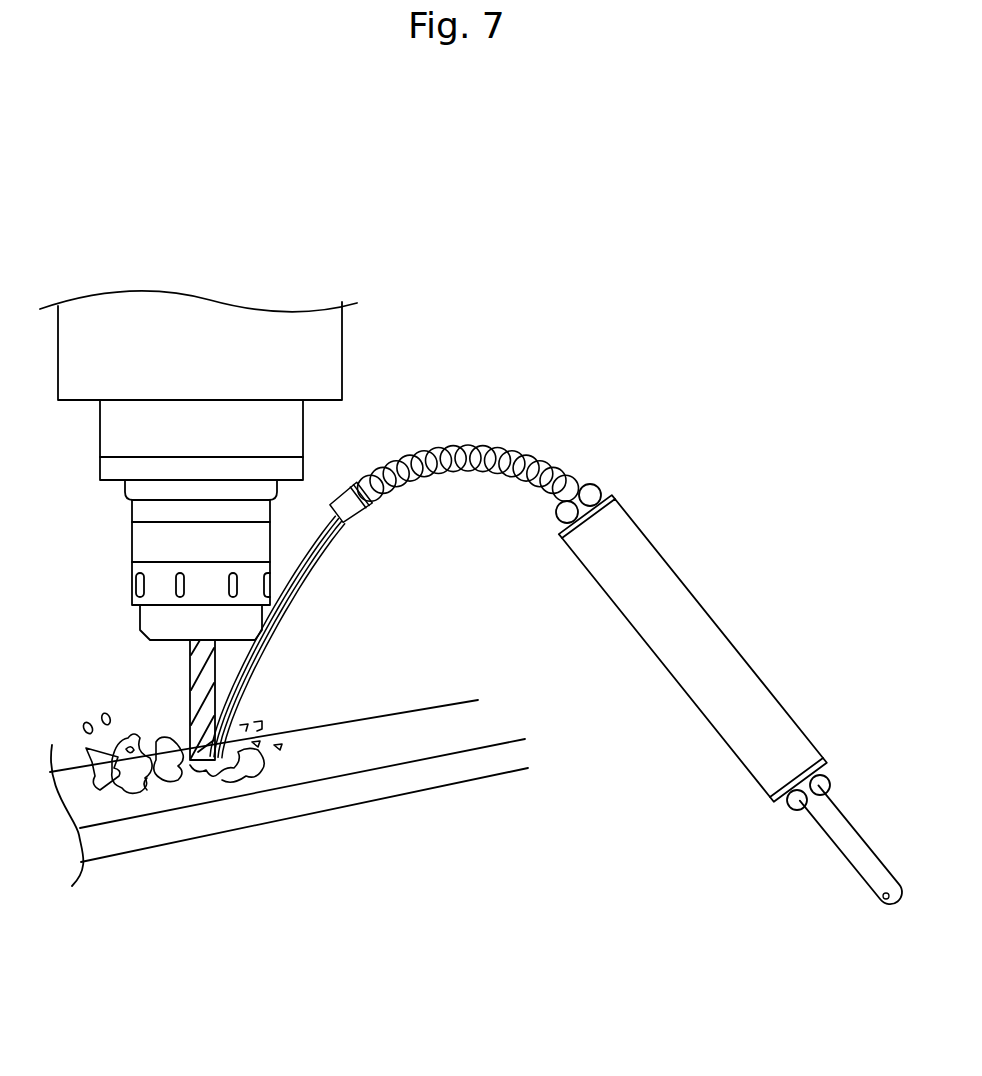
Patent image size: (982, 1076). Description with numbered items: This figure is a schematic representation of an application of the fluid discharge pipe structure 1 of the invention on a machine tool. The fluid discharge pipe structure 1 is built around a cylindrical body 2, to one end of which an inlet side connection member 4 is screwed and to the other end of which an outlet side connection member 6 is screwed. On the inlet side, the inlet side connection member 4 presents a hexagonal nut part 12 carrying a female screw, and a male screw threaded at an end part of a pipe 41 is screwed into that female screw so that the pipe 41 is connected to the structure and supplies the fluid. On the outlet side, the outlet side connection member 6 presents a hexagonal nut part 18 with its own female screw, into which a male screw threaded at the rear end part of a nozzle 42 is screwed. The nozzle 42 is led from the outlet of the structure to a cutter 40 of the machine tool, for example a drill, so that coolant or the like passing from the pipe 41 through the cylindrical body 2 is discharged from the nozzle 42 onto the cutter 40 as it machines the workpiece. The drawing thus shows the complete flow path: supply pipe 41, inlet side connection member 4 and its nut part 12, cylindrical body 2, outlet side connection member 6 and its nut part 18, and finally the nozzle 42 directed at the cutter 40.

The fluid discharge pipe structure 1 is at (684, 641).
The cylindrical body 2 is at (672, 667).
The inlet side connection member 4 is at (830, 781).
The outlet side connection member 6 is at (593, 493).
The hexagonal nut part 12 is at (790, 806).
The hexagonal nut part 18 is at (563, 517).
The cutter 40 is at (203, 693).
The pipe 41 is at (843, 845).
The nozzle 42 is at (455, 452).